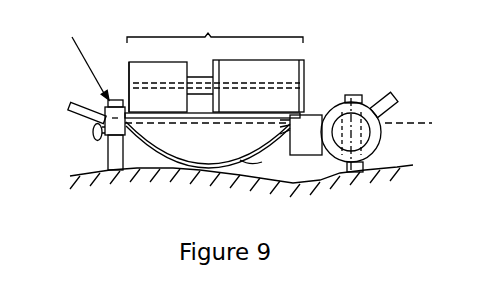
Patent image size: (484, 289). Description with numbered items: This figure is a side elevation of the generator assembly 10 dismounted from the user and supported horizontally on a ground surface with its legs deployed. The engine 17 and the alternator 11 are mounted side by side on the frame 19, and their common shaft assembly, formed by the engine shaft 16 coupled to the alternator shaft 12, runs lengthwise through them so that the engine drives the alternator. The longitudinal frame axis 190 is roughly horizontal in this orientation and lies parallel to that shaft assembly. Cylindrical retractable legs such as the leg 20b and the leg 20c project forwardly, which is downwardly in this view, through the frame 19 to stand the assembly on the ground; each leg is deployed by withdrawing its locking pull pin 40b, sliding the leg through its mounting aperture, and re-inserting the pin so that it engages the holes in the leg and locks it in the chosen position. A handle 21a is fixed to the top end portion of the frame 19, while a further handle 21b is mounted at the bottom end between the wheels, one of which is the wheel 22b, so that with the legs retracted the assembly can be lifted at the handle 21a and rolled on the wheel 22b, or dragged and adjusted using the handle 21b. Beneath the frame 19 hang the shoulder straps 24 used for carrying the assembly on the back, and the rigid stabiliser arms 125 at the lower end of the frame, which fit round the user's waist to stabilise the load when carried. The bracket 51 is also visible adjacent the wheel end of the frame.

The generator assembly 10 is at (215, 27).
The alternator 11 is at (305, 72).
The alternator shaft 12 is at (248, 83).
The engine shaft 16 is at (147, 83).
The engine 17 is at (126, 72).
The frame 19 is at (83, 60).
The retractable leg 20b is at (108, 154).
The retractable leg 20c is at (366, 168).
The handle 21a is at (84, 105).
The handle 21b is at (385, 96).
The wheel 22b is at (362, 113).
The shoulder straps 24 is at (245, 158).
The locking pull pin 40b is at (92, 124).
The mounting bracket 51 is at (314, 112).
The stabiliser arms 125 is at (280, 132).
The longitudinal frame axis 190 is at (432, 120).